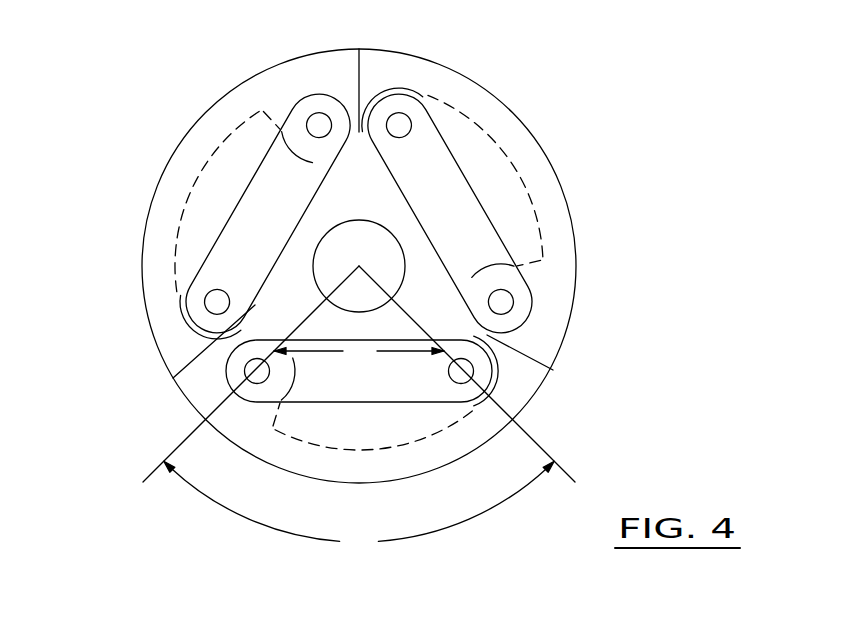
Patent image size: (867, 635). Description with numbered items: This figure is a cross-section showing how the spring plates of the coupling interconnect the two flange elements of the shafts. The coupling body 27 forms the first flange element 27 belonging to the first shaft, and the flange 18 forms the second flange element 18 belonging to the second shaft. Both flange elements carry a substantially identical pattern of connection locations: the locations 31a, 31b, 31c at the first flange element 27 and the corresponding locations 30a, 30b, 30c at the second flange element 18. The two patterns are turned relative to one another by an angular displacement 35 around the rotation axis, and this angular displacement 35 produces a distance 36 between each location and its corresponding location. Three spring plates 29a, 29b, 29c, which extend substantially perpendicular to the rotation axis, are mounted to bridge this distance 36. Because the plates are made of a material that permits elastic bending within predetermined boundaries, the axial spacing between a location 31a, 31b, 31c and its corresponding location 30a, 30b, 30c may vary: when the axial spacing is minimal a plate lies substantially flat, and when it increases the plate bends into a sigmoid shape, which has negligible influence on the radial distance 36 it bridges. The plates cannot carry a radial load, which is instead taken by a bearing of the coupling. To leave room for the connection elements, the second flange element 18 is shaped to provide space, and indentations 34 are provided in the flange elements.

The flange 18 is at (535, 200).
The coupling body 27 is at (524, 132).
The spring plate 29a is at (458, 200).
The spring plate 29b is at (390, 375).
The spring plate 29c is at (275, 198).
The corresponding location 30a is at (401, 123).
The corresponding location 30b is at (460, 373).
The corresponding location 30c is at (216, 302).
The location 31a is at (502, 302).
The location 31b is at (257, 371).
The location 31c is at (318, 124).
The indentation 34 is at (410, 72).
The angular displacement 35 is at (359, 412).
The distance 36 is at (359, 352).